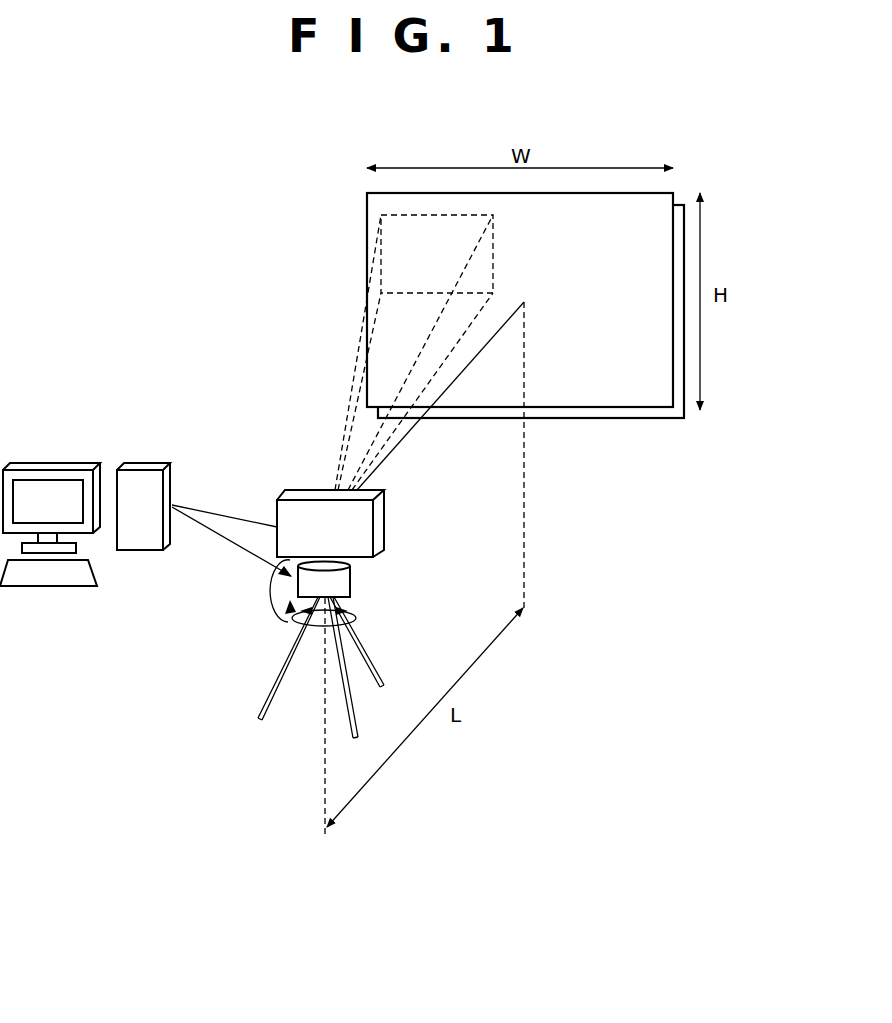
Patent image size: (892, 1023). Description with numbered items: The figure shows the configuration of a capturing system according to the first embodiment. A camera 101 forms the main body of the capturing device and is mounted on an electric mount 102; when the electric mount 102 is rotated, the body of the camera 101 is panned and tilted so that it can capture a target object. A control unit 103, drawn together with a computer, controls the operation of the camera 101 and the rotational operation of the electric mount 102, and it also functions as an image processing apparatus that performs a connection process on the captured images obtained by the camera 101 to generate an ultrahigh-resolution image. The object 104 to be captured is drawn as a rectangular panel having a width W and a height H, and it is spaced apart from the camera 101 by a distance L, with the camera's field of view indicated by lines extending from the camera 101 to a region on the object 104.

The camera 101 is at (302, 492).
The electric mount 102 is at (350, 577).
The control unit 103 is at (137, 552).
The object 104 is at (367, 232).